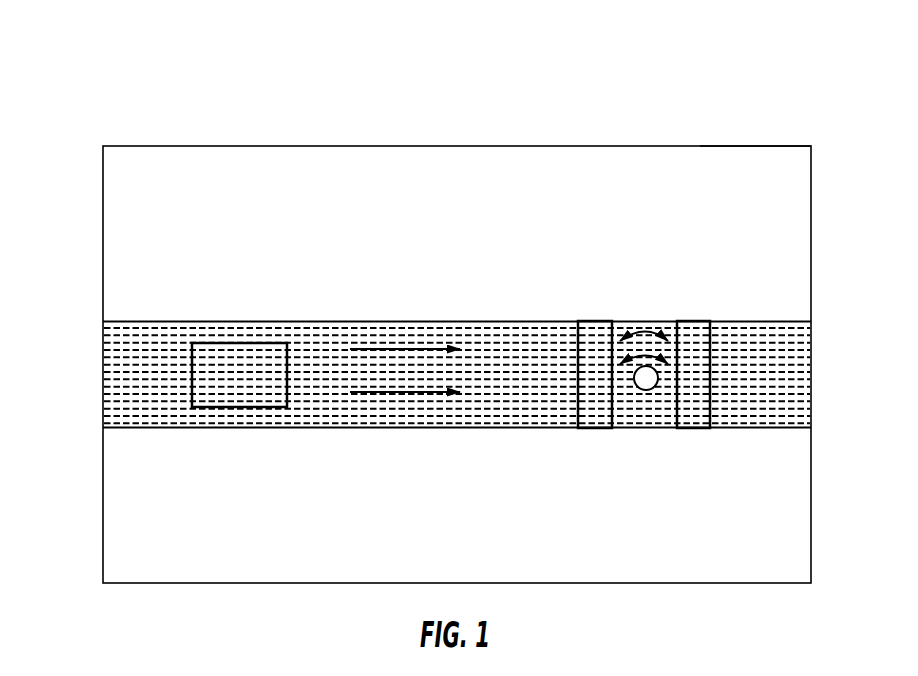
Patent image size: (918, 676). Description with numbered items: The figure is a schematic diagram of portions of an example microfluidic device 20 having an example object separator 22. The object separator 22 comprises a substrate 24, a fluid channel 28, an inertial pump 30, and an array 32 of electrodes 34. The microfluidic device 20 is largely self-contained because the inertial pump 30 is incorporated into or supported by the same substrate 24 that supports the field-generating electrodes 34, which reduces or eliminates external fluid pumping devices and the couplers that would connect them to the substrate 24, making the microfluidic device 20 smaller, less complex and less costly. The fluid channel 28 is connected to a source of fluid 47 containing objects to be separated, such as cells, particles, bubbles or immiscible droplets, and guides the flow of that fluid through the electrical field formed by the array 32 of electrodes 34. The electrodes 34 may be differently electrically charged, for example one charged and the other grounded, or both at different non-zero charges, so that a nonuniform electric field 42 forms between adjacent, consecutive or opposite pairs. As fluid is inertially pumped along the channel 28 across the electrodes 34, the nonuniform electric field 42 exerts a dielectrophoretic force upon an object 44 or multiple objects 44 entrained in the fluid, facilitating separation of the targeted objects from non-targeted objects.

The microfluidic device 20 is at (100, 76).
The object separator 22 is at (629, 141).
The substrate 24 is at (752, 146).
The fluid channel 28 is at (139, 322).
The inertial pump 30 is at (233, 343).
The source of fluid 47 is at (328, 345).
The array of electrodes 32 is at (606, 306).
The electrodes 34 is at (599, 428).
The nonuniform electric field 42 is at (646, 332).
The object 44 is at (658, 383).